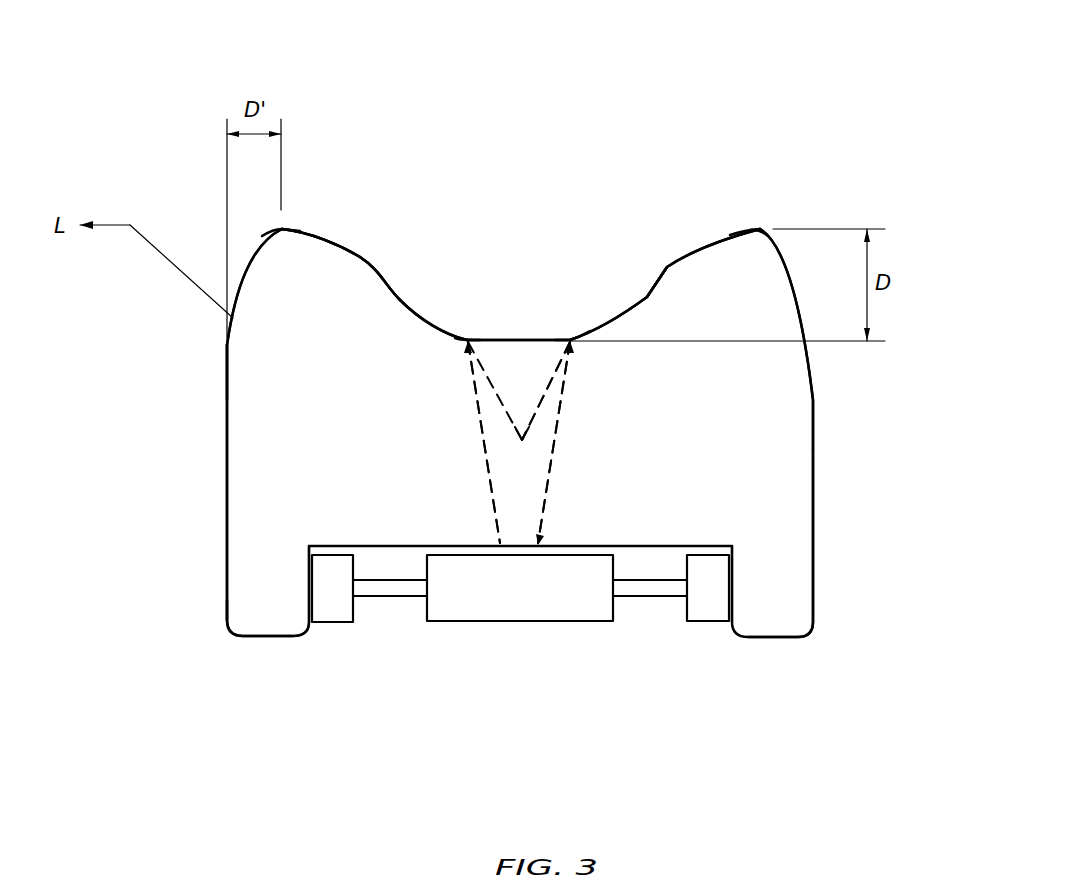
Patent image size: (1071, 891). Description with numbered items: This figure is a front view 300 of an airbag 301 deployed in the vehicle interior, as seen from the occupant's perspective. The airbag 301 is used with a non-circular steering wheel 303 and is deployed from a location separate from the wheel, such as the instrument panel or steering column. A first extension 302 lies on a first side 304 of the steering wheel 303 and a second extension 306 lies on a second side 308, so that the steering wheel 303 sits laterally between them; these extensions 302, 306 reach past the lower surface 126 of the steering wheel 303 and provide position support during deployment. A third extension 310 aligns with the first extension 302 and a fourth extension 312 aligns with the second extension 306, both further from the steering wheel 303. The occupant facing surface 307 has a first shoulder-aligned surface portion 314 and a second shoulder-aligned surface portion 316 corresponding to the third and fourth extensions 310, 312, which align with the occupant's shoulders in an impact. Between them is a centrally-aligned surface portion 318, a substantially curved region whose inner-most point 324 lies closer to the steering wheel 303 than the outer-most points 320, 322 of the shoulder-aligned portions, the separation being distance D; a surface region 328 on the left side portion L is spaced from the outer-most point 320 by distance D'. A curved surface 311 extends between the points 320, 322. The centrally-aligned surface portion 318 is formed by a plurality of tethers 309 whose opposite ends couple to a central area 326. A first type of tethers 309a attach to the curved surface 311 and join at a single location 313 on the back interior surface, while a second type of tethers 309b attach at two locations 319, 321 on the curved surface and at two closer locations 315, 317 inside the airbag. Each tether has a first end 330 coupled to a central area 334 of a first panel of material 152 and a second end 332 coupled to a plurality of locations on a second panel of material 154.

The front view 300 is at (762, 58).
The airbag 301 is at (366, 247).
The first extension 302 is at (243, 617).
The steering wheel 303 is at (417, 620).
The first side 304 is at (312, 627).
The second extension 306 is at (772, 620).
The occupant facing surface 307 is at (310, 433).
The second side 308 is at (727, 623).
The plurality of tethers 309 is at (493, 397).
The first type of tethers 309a is at (545, 393).
The second type of tethers 309b is at (555, 443).
The third extension 310 is at (282, 255).
The curved surface 311 is at (656, 303).
The fourth extension 312 is at (767, 245).
The single location 313 is at (522, 440).
The first shoulder-aligned surface portion 314 is at (262, 237).
The location 315 is at (502, 547).
The second shoulder-aligned surface portion 316 is at (753, 228).
The location 317 is at (538, 547).
The centrally-aligned surface portion 318 is at (498, 338).
The location 319 is at (468, 348).
The outer-most point 320 is at (268, 230).
The location 321 is at (572, 346).
The outer-most point 322 is at (768, 228).
The inner-most point 324 is at (478, 338).
The central area 326 is at (513, 497).
The surface region 328 is at (227, 362).
The first end 330 is at (572, 338).
The second end 332 is at (540, 541).
The central area 334 is at (415, 305).
The lower surface 126 is at (382, 610).
The first panel of material 152 is at (663, 272).
The second panel of material 154 is at (648, 547).